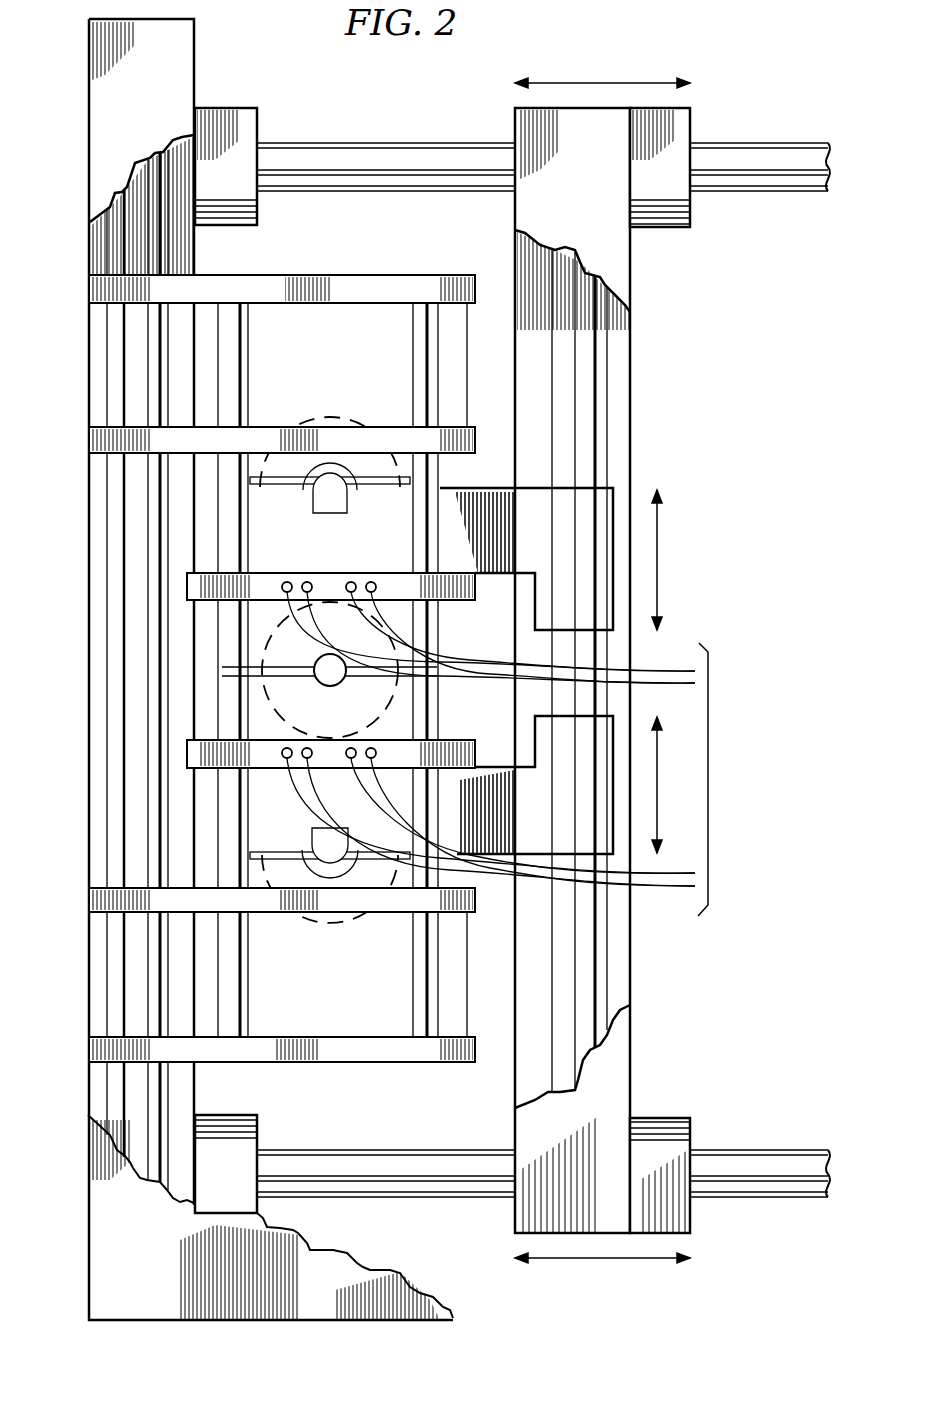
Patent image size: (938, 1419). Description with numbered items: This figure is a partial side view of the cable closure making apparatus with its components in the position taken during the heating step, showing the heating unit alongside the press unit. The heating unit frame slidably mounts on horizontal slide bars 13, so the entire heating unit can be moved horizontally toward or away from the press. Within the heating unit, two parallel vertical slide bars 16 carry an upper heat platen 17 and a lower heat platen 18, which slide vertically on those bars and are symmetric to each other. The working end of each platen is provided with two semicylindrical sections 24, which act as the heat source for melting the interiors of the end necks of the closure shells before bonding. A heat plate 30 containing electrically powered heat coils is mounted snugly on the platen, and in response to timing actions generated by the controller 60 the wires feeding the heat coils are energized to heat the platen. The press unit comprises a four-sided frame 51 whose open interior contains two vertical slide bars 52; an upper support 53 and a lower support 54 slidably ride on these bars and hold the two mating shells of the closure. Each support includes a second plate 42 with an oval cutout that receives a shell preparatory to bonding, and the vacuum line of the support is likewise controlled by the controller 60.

The horizontal slide bar 13 is at (770, 152).
The vertical slide bar 16 is at (597, 654).
The upper heat platen 17 is at (505, 482).
The lower heat platen 18 is at (462, 820).
The semicylindrical section 24 is at (332, 470).
The heat plate 30 is at (470, 604).
The second plate 42 is at (108, 455).
The press unit frame 51 is at (89, 97).
The vertical slide bar of press unit 52 is at (125, 975).
The upper support 53 is at (287, 273).
The lower support 54 is at (292, 1068).
The controller 60 is at (771, 779).